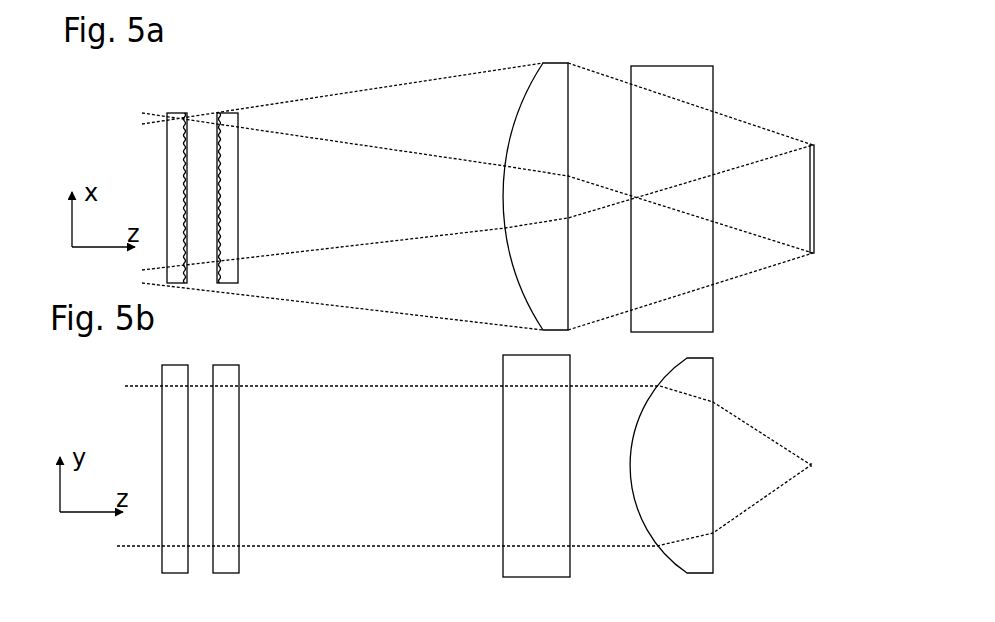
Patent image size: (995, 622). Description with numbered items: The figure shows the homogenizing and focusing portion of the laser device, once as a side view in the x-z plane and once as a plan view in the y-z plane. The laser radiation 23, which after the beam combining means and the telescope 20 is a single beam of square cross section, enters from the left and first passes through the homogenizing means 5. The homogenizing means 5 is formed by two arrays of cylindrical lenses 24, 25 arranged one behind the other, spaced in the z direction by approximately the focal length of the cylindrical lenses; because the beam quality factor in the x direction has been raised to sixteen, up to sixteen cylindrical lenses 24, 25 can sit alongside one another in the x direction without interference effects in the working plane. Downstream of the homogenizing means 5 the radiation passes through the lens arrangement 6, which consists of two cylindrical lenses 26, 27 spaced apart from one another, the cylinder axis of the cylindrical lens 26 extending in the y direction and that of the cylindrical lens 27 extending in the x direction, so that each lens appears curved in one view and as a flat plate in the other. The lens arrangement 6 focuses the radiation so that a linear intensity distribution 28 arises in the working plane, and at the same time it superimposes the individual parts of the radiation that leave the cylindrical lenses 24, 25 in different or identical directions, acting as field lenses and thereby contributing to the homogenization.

In FIG. 5A, the homogenizing means 5 is at (196, 294).
In FIG. 5B, the homogenizing means 5 is at (200, 354).
In FIG. 5A, the lens arrangement 6 is at (641, 50).
In FIG. 5A, the telescope 20 is at (226, 0).
In FIG. 5A, the laser radiation 23 is at (150, 141).
In FIG. 5A, the cylindrical lens array 24 is at (185, 117).
In FIG. 5A, the cylindrical lens array 25 is at (221, 113).
In FIG. 5A, the cylindrical lens 26 is at (535, 196).
In FIG. 5B, the cylindrical lens 26 is at (549, 436).
In FIG. 5A, the cylindrical lens 27 is at (682, 271).
In FIG. 5B, the cylindrical lens 27 is at (671, 465).
In FIG. 5A, the linear intensity distribution 28 is at (815, 192).
In FIG. 5B, the linear intensity distribution 28 is at (813, 463).